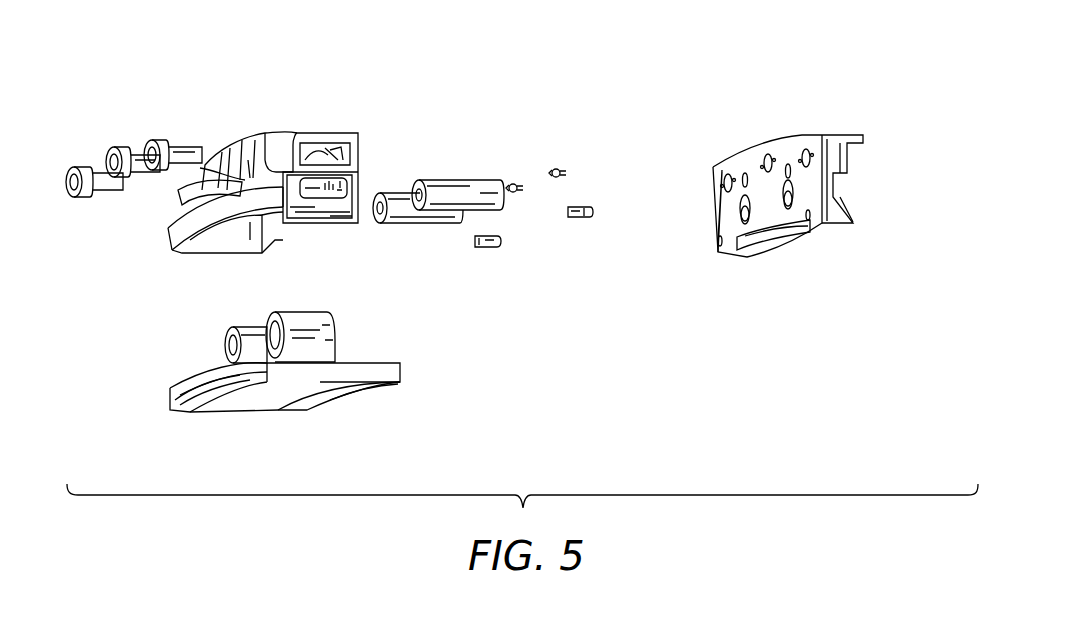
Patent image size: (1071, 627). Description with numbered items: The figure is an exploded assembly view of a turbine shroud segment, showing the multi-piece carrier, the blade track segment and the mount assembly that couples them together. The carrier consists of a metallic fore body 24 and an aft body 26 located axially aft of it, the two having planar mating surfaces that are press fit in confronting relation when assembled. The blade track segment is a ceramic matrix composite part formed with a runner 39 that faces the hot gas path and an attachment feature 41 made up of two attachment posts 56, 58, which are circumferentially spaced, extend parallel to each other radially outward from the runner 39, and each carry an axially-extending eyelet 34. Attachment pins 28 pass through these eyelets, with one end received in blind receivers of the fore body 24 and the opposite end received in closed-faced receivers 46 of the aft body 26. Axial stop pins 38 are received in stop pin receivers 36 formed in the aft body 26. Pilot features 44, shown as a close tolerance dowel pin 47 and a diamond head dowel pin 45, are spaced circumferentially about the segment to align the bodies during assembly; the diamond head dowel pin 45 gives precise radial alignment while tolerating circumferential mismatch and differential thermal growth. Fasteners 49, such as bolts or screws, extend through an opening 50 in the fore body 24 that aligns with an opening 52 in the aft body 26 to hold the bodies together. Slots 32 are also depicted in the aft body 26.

The fore body 24 is at (162, 238).
The aft body 26 is at (877, 124).
The attachment pins 28 is at (392, 186).
The slots 32 is at (770, 210).
The axially-extending eyelet 34 is at (270, 332).
The stop pin receivers 36 is at (788, 178).
The axial stop pins 38 is at (513, 170).
The runner 39 is at (310, 395).
The attachment feature 41 is at (365, 305).
The pilot features 44 is at (558, 292).
The diamond head dowel pin 45 is at (578, 218).
The closed-faced receivers 46 is at (818, 227).
The close tolerance dowel pin 47 is at (485, 250).
The fastener 49 is at (162, 128).
The opening 50 is at (329, 150).
The opening 52 is at (770, 172).
The attachment post 56 is at (330, 356).
The attachment post 58 is at (171, 386).